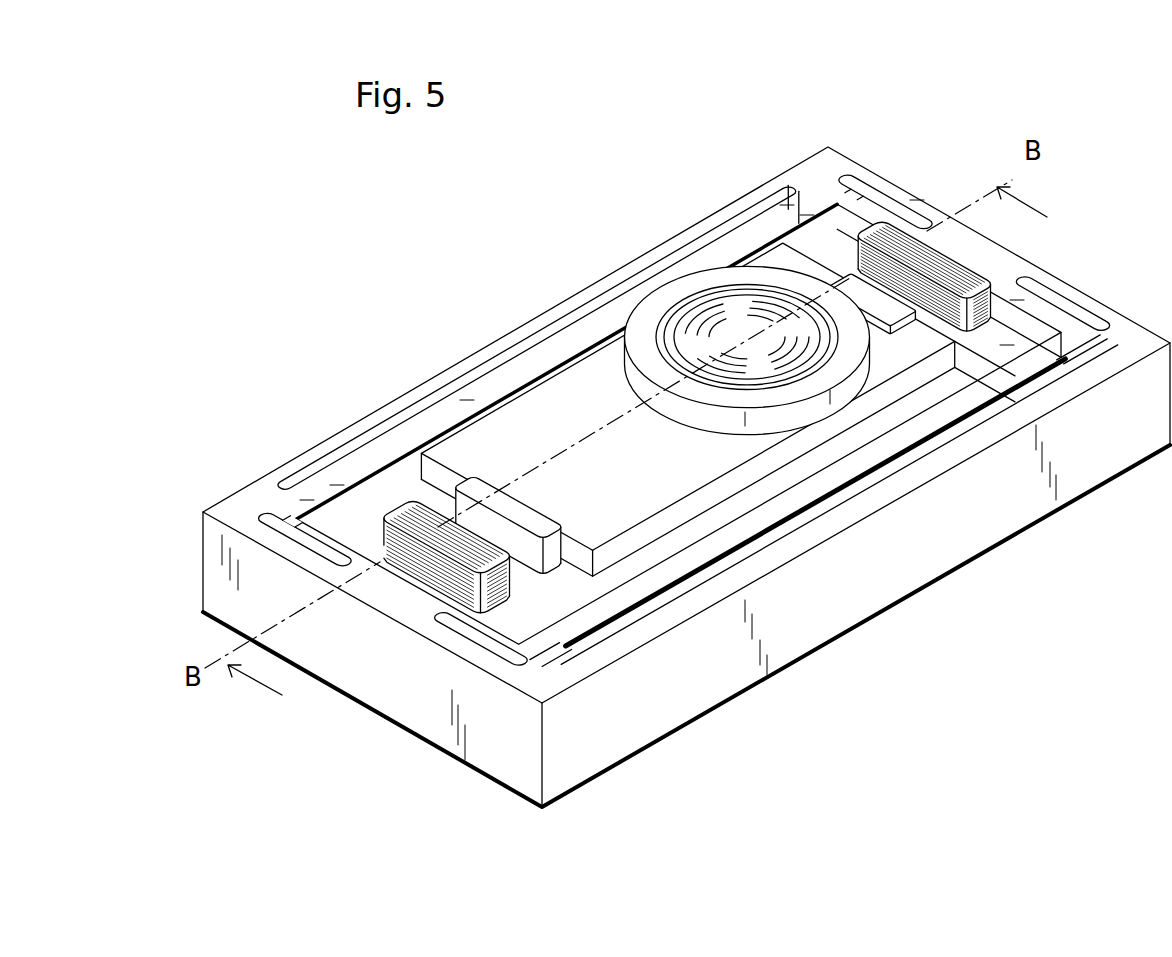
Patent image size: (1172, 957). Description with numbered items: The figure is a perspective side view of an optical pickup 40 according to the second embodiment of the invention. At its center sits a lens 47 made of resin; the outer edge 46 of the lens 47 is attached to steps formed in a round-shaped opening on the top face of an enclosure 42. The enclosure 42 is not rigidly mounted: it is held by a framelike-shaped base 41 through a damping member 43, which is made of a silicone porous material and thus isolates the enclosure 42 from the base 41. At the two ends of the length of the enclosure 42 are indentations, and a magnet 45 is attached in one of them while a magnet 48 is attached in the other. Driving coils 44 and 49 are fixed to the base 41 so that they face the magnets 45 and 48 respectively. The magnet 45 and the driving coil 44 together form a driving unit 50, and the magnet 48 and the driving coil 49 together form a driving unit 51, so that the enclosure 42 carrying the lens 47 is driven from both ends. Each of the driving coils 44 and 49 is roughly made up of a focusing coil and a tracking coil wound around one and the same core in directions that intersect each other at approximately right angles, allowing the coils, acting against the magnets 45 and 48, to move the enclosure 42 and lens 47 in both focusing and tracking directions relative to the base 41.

The optical pickup 40 is at (686, 439).
The base 41 is at (868, 583).
The enclosure 42 is at (652, 490).
The damping member 43 is at (548, 618).
The driving coil 44 is at (420, 582).
The magnet 45 is at (475, 482).
The outer edge 46 is at (650, 312).
The lens 47 is at (730, 323).
The magnet 48 is at (847, 283).
The driving coil 49 is at (974, 255).
The driving unit 50 is at (510, 607).
The driving unit 51 is at (958, 325).